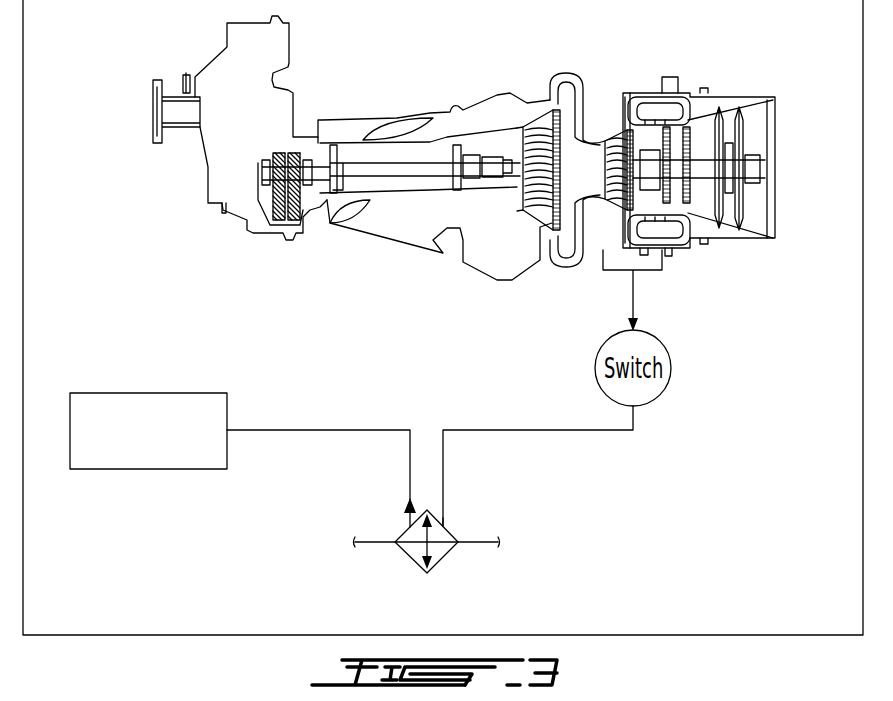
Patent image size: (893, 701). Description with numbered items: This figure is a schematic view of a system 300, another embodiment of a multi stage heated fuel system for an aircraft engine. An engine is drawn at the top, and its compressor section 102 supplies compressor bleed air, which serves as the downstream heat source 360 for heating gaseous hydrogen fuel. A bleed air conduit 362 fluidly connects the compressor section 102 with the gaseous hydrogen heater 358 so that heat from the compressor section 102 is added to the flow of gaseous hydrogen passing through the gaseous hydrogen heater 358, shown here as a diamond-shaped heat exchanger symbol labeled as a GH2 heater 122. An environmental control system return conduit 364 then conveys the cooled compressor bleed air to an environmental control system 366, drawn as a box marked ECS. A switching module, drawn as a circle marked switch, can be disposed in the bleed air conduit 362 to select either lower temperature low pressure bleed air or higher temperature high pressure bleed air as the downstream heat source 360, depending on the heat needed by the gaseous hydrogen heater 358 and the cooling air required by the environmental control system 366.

The compressor section 102 is at (627, 68).
The system 300 is at (795, 74).
The downstream heat source 360 is at (697, 190).
The environmental control system 366 is at (148, 393).
The environmental control system return conduit 364 is at (320, 430).
The bleed air conduit 362 is at (530, 430).
The gaseous hydrogen heater 122 is at (372, 542).
The gaseous hydrogen heater 358 is at (452, 534).